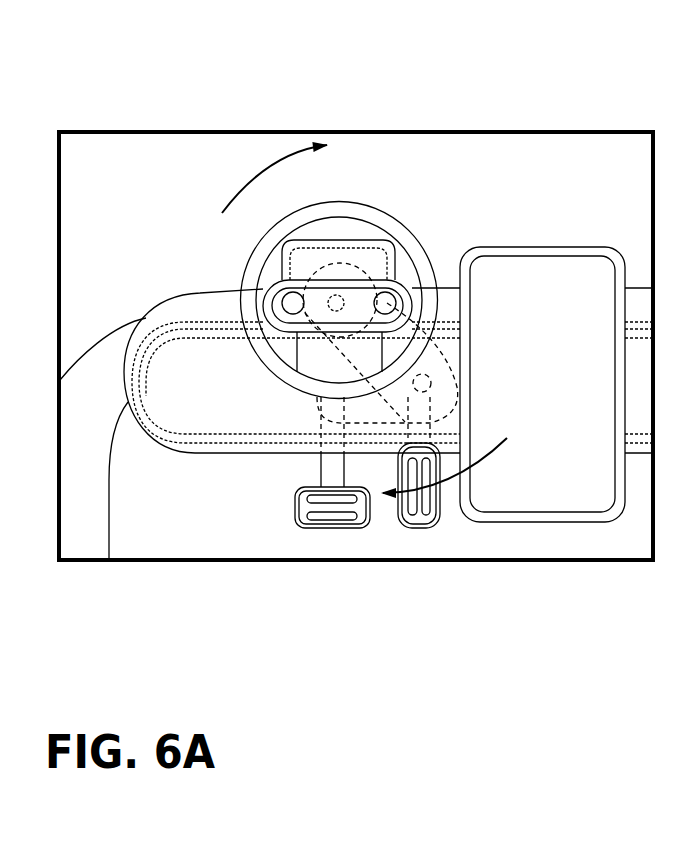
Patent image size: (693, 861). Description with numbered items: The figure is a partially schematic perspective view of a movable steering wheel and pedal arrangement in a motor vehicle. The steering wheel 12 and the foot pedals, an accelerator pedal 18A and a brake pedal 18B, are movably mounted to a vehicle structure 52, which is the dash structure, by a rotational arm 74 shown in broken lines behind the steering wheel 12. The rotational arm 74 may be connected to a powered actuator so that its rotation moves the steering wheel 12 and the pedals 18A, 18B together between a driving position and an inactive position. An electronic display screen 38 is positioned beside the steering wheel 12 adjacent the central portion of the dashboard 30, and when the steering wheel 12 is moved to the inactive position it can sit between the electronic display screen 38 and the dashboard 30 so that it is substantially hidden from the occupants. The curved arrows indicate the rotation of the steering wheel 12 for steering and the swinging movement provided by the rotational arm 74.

The steering wheel 12 is at (368, 212).
The dashboard 30 is at (184, 311).
The electronic display screen 38 is at (562, 287).
The vehicle structure 52 is at (642, 417).
The rotational arm 74 is at (448, 283).
The accelerator pedal 18A is at (416, 517).
The brake pedal 18B is at (329, 512).